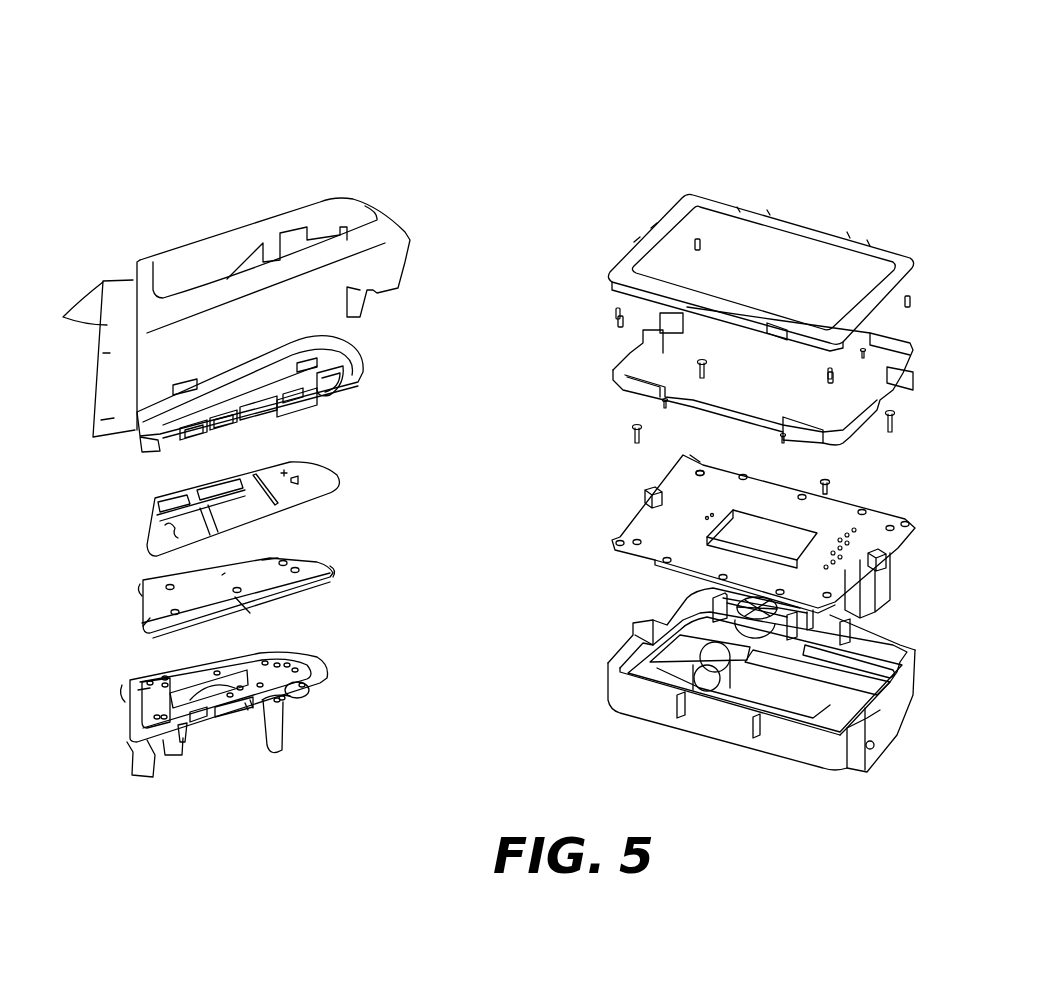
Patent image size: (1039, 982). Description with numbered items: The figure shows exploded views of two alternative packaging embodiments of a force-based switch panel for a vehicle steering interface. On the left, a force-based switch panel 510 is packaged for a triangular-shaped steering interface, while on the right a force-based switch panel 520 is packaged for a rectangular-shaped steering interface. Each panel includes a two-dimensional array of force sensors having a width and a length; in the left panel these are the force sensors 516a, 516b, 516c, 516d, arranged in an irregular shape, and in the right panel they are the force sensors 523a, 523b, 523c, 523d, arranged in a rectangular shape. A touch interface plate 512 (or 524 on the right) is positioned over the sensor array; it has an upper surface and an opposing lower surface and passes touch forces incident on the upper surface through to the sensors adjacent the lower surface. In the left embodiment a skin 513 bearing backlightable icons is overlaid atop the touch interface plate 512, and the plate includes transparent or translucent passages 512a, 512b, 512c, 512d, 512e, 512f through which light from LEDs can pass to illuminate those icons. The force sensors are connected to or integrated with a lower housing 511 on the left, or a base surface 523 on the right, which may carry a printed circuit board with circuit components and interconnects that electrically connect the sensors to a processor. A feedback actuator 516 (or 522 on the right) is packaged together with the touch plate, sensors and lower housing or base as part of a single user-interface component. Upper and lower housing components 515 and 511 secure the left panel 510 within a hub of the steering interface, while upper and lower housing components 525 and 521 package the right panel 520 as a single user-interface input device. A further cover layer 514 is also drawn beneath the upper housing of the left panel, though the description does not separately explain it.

The force-based switch panel 510 is at (432, 162).
The lower housing 511 is at (130, 720).
The touch interface plate 512 is at (142, 612).
The transparent or translucent passage 512a is at (298, 568).
The transparent or translucent passage 512b is at (335, 577).
The transparent or translucent passage 512c is at (270, 556).
The transparent or translucent passage 512d is at (240, 590).
The transparent or translucent passage 512e is at (147, 618).
The transparent or translucent passage 512f is at (168, 587).
The skin 513 is at (152, 520).
The bottom cover 514 is at (360, 355).
The upper housing component 515 is at (142, 282).
The feedback actuator 516 is at (245, 615).
The force sensor 516a is at (137, 690).
The force sensor 516b is at (183, 735).
The force sensor 516c is at (260, 662).
The force sensor 516d is at (310, 690).
The force-based switch panel 520 is at (900, 162).
The lower housing component 521 is at (920, 670).
The feedback actuator 522 is at (860, 622).
The base surface 523 is at (915, 527).
The force sensor 523a is at (907, 522).
The force sensor 523b is at (690, 458).
The force sensor 523c is at (620, 540).
The force sensor 523d is at (887, 600).
The touch interface plate 524 is at (913, 373).
The upper housing component 525 is at (905, 268).